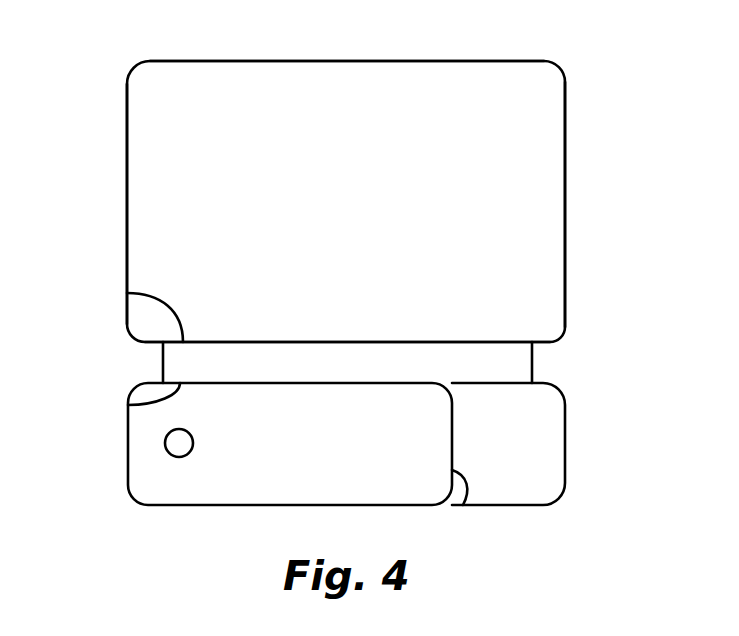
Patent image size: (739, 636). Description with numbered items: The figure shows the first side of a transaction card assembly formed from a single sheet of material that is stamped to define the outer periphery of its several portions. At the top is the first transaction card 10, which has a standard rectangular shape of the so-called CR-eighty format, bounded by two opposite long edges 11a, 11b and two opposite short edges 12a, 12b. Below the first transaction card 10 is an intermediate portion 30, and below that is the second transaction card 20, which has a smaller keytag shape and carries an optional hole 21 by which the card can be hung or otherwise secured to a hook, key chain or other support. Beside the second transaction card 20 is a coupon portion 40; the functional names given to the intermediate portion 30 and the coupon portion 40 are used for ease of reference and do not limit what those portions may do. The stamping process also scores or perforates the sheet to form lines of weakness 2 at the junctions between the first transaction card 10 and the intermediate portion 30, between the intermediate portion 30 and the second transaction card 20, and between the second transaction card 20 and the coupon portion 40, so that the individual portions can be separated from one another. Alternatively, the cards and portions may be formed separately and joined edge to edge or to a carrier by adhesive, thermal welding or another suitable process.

The first transaction card 10 is at (568, 108).
The long edge 11a is at (478, 61).
The long edge 11b is at (503, 342).
The short edge 12a is at (127, 192).
The short edge 12b is at (565, 190).
The line of weakness 2 is at (150, 300).
The second transaction card 20 is at (125, 467).
The hole 21 is at (165, 443).
The intermediate portion 30 is at (537, 366).
The coupon portion 40 is at (570, 430).